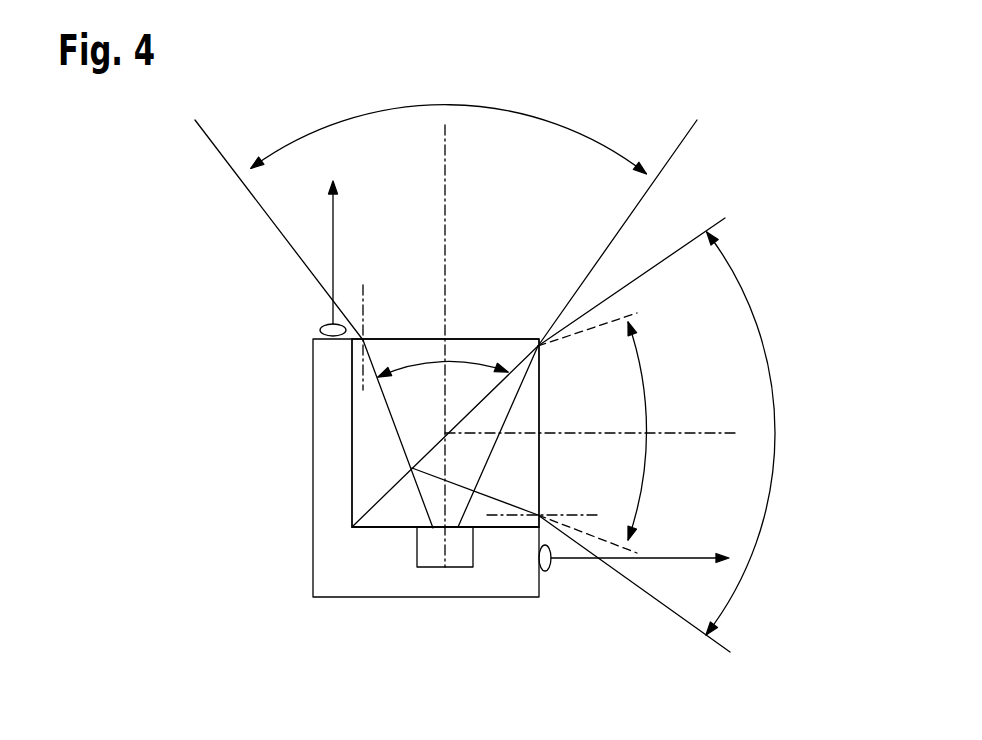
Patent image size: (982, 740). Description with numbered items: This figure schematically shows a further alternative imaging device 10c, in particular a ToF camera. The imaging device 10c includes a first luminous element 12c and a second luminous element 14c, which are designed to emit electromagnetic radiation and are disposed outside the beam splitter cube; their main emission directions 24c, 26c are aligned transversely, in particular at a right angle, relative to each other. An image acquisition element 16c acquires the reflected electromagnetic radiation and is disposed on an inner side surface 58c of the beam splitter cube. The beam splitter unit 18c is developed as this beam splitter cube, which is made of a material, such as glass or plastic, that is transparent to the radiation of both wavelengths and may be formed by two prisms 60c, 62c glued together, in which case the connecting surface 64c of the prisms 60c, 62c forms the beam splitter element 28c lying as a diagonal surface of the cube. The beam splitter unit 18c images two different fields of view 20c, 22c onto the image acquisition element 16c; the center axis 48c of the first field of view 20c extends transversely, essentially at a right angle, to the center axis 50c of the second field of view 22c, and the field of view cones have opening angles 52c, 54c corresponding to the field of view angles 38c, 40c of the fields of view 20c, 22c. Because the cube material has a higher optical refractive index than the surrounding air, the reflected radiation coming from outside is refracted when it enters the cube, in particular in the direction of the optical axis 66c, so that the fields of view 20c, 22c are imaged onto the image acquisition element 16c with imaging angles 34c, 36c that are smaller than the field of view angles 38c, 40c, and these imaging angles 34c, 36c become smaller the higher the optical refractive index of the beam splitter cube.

The imaging device 10c is at (212, 572).
The first luminous element 12c is at (330, 331).
The second luminous element 14c is at (548, 572).
The image acquisition element 16c is at (458, 553).
The beam splitter unit 18c is at (514, 300).
The first field of view 20c is at (219, 150).
The second field of view 22c is at (635, 587).
The main emission direction 24c is at (334, 224).
The main emission direction 26c is at (683, 558).
The beam splitter element 28c is at (343, 436).
The connecting surface 64c is at (387, 493).
The imaging angle 34c is at (467, 364).
The imaging angle 36c is at (643, 350).
The field of view angle 38c is at (470, 116).
The opening angle 52c is at (589, 137).
The field of view angle 40c is at (784, 433).
The opening angle 54c is at (760, 325).
The center axis 48c is at (450, 157).
The center axis 50c is at (697, 433).
The inner side surface 58c is at (380, 513).
The prism 60c is at (380, 425).
The prism 62c is at (538, 390).
The optical axis 66c is at (366, 297).